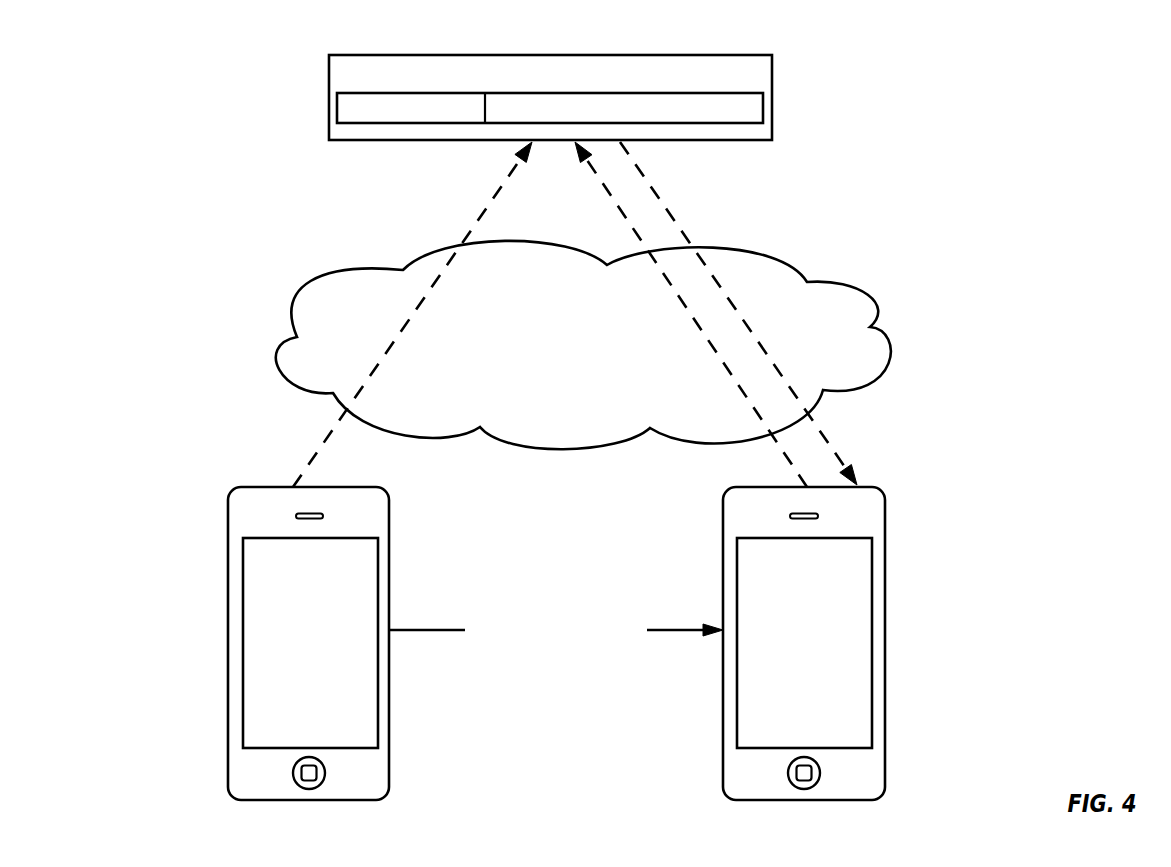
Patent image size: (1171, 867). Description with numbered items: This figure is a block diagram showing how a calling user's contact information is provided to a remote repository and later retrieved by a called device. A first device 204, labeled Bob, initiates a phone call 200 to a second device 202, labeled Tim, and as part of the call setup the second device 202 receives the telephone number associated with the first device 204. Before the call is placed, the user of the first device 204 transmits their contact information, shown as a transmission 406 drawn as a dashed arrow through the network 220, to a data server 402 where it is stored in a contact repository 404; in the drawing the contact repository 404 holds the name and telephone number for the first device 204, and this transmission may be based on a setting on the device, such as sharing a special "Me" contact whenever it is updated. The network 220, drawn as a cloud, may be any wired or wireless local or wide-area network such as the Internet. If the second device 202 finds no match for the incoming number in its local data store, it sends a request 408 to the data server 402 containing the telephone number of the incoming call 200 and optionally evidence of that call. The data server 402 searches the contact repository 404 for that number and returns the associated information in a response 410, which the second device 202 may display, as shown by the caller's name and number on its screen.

The phone call 200 is at (556, 612).
The device 202 is at (838, 637).
The device 204 is at (273, 638).
The network 220 is at (605, 344).
The data server 402 is at (516, 97).
The contact repository 404 is at (511, 92).
The transmission of contact information 406 is at (412, 314).
The request 408 is at (691, 314).
The response 410 is at (738, 313).